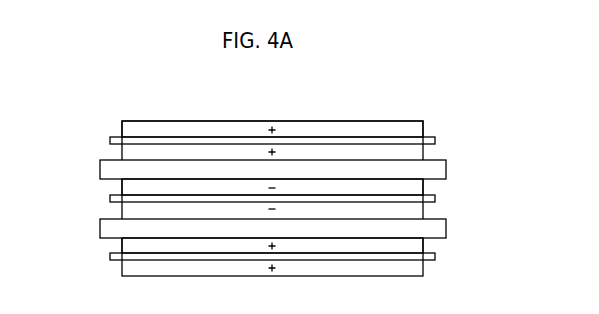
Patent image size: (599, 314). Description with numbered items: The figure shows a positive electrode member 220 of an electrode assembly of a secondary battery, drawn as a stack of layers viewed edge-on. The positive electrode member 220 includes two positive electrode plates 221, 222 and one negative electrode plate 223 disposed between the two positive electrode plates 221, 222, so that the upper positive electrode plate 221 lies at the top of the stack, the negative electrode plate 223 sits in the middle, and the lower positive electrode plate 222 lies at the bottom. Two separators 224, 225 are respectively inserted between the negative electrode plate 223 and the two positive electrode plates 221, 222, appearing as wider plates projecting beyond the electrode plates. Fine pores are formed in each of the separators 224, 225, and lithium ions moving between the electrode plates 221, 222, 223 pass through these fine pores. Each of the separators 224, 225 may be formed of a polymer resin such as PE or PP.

The positive electrode member 220 is at (94, 103).
The positive electrode plate 221 is at (424, 127).
The positive electrode plate 222 is at (424, 242).
The negative electrode plate 223 is at (424, 185).
The separator 224 is at (99, 170).
The separator 225 is at (99, 229).